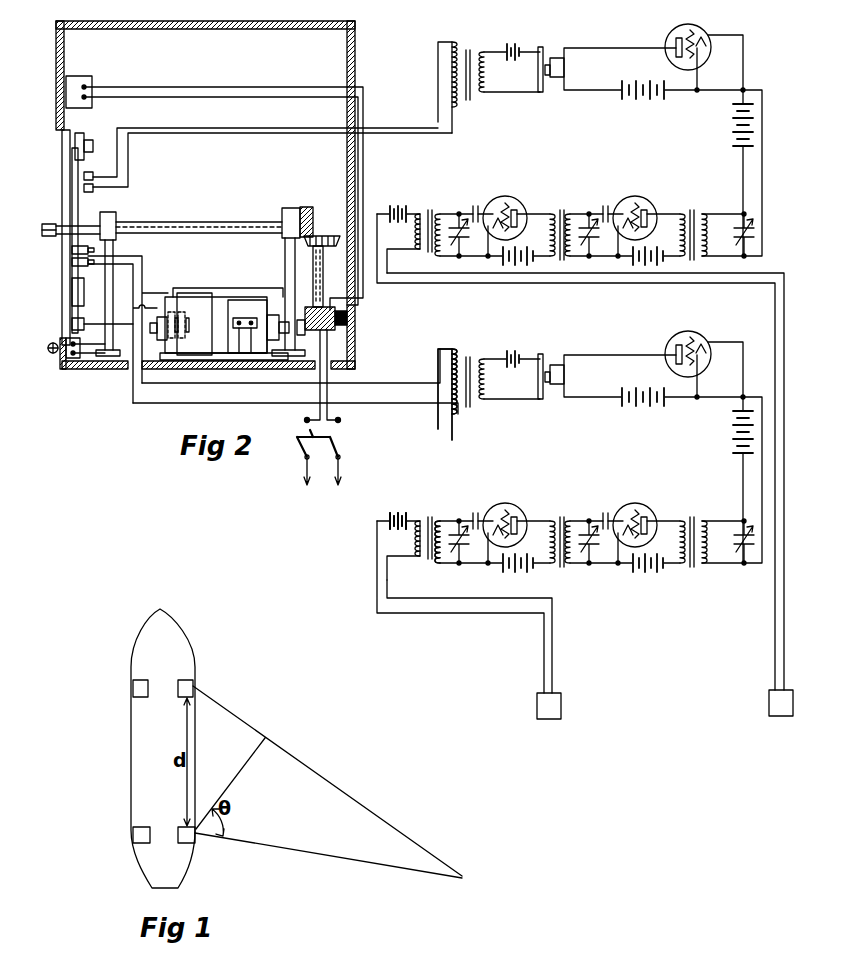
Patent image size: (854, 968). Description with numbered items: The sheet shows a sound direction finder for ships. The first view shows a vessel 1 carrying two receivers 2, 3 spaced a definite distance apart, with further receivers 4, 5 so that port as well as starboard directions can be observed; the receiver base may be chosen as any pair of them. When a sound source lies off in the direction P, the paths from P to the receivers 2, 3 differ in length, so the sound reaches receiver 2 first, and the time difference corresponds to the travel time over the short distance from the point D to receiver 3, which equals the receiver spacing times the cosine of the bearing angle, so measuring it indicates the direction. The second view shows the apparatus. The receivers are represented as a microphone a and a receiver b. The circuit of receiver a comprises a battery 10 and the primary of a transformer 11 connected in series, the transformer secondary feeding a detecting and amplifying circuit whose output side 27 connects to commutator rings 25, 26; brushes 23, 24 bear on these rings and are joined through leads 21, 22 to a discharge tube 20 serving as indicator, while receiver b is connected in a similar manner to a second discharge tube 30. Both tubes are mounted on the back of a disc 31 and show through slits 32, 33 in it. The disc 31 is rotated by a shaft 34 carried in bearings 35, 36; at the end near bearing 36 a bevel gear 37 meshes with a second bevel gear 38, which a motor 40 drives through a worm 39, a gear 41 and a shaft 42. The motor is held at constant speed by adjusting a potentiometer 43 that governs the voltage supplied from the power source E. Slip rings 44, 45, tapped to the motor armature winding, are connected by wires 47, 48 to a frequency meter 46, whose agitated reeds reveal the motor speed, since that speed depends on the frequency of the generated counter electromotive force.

In FIG. 1, the vessel 1 is at (197, 748).
In FIG. 1, the receiver 2 is at (192, 836).
In FIG. 1, the receiver 3 is at (196, 686).
In FIG. 1, the receiver 4 is at (143, 835).
In FIG. 1, the receiver 5 is at (133, 690).
In FIG. 2, the battery 10 is at (399, 513).
In FIG. 2, the primary of a transformer 11 is at (442, 520).
In FIG. 2, the discharge tube 20 is at (60, 345).
In FIG. 2, the lead 21 is at (50, 352).
In FIG. 2, the lead 22 is at (72, 292).
In FIG. 2, the brush 23 is at (72, 253).
In FIG. 2, the brush 24 is at (74, 268).
In FIG. 2, the commutator ring 25 is at (92, 251).
In FIG. 2, the commutator ring 26 is at (92, 262).
In FIG. 2, the output side of the amplifying circuit 27 is at (445, 352).
In FIG. 2, the discharge tube 30 is at (82, 147).
In FIG. 2, the disc 31 is at (63, 188).
In FIG. 2, the slit 32 is at (68, 313).
In FIG. 2, the slit 33 is at (62, 150).
In FIG. 2, the shaft 34 is at (166, 222).
In FIG. 2, the bearing 35 is at (112, 213).
In FIG. 2, the bearing 36 is at (288, 208).
In FIG. 2, the bevel gear 37 is at (312, 212).
In FIG. 2, the second bevel gear 38 is at (322, 238).
In FIG. 2, the worm 39 is at (328, 330).
In FIG. 2, the motor 40 is at (222, 352).
In FIG. 2, the gear 41 is at (348, 320).
In FIG. 2, the shaft 42 is at (324, 286).
In FIG. 2, the potentiometer 43 is at (55, 360).
In FIG. 2, the slip ring 44 is at (177, 330).
In FIG. 2, the slip ring 45 is at (185, 333).
In FIG. 2, the frequency meter 46 is at (82, 76).
In FIG. 2, the wire 47 is at (160, 96).
In FIG. 2, the wire 48 is at (213, 86).
In FIG. 2, the power source E is at (319, 412).
In FIG. 2, the receiver a is at (541, 722).
In FIG. 2, the receiver b is at (779, 720).
In FIG. 1, the point D is at (327, 781).
In FIG. 1, the direction of the sound source P is at (335, 863).